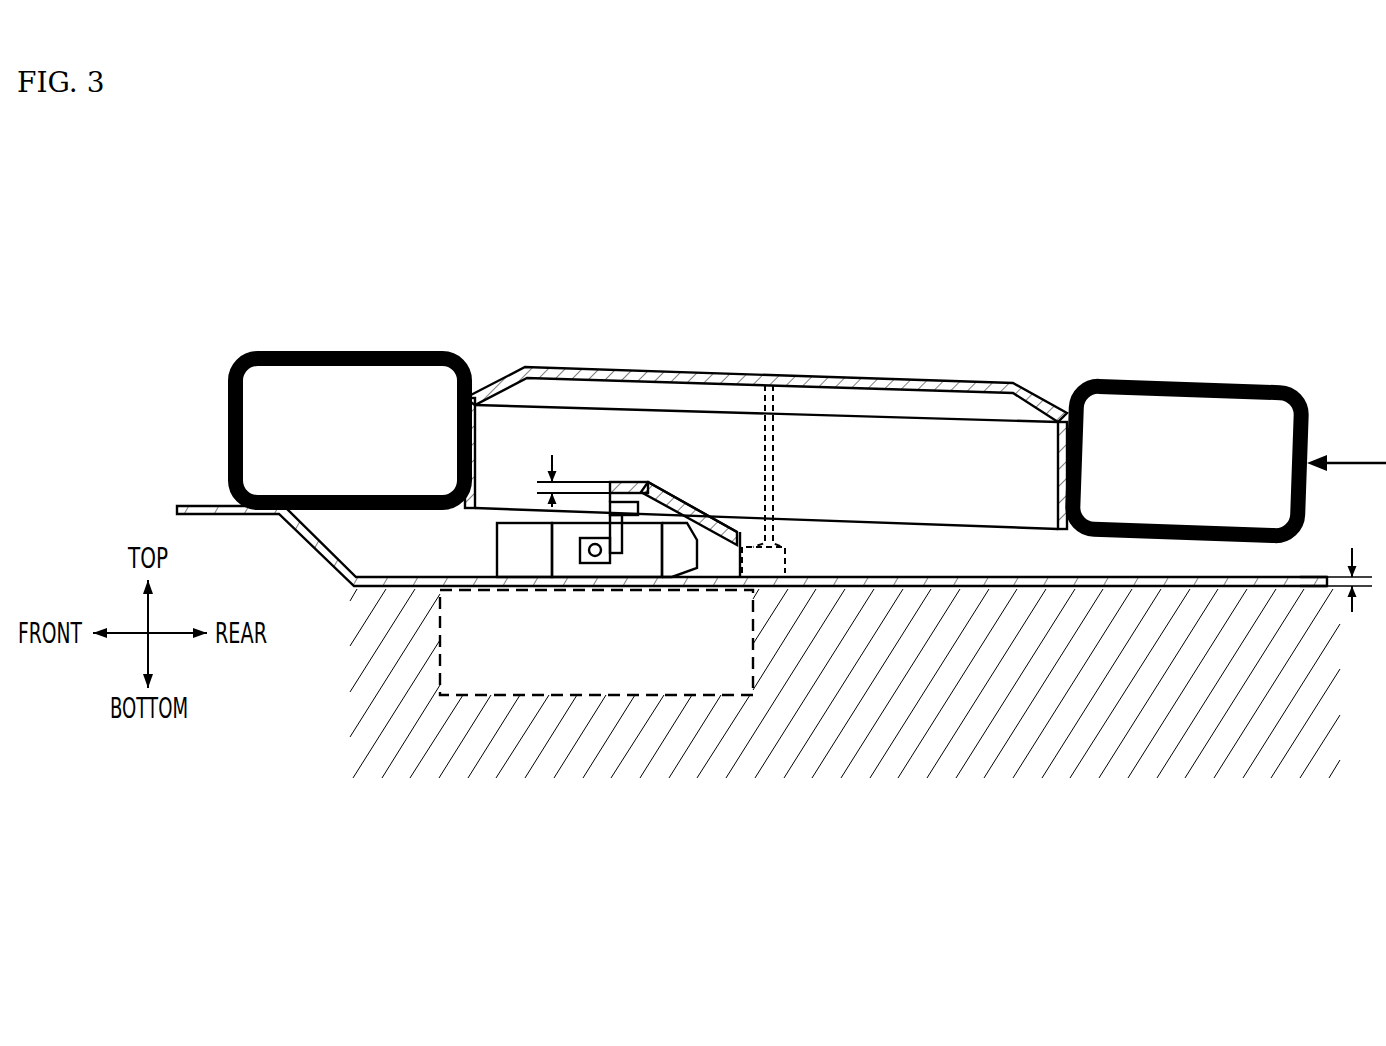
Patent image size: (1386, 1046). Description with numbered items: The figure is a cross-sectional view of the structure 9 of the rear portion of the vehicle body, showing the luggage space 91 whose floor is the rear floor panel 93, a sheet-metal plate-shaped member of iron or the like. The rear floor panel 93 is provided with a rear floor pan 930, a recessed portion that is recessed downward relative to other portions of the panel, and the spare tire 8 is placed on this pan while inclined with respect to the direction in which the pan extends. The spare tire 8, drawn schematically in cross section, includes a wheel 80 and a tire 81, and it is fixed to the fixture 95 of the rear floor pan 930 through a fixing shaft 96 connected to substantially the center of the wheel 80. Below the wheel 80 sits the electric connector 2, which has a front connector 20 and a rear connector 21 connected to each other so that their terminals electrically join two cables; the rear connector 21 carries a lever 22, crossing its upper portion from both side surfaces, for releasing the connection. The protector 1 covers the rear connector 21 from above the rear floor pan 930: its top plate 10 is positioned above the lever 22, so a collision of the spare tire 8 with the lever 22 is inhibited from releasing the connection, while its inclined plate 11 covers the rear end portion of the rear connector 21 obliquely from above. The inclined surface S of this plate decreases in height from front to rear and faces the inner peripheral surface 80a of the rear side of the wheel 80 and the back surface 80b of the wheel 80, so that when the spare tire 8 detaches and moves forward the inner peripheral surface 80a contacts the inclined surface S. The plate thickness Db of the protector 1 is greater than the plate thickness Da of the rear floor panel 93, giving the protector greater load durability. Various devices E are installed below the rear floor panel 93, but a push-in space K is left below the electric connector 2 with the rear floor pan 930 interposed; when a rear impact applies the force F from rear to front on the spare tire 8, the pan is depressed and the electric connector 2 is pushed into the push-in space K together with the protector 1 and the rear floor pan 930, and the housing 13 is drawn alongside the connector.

The protector 1 is at (660, 483).
The electric connector 2 is at (570, 523).
The spare tire 8 is at (766, 387).
The structure of the rear portion of the vehicle body 9 is at (1221, 286).
The top plate 10 is at (621, 512).
The inclined plate 11 is at (690, 502).
The housing 13 is at (713, 557).
The front connector 20 is at (520, 557).
The rear connector 21 is at (640, 557).
The lever 22 is at (625, 483).
The wheel 80 is at (820, 376).
The inner peripheral surface 80a is at (1056, 510).
The back surface 80b is at (883, 392).
The tire 81 is at (355, 352).
The luggage space 91 is at (795, 272).
The rear floor panel 93 is at (222, 506).
The rear floor pan 930 is at (1295, 577).
The fixture 95 is at (774, 545).
The fixing shaft 96 is at (774, 453).
The inclined surface S is at (705, 512).
The push-in space K is at (606, 656).
The devices E is at (803, 691).
The plate thickness of the rear floor panel Da is at (1357, 599).
The plate thickness of the protector Db is at (572, 464).
The force F is at (1346, 449).